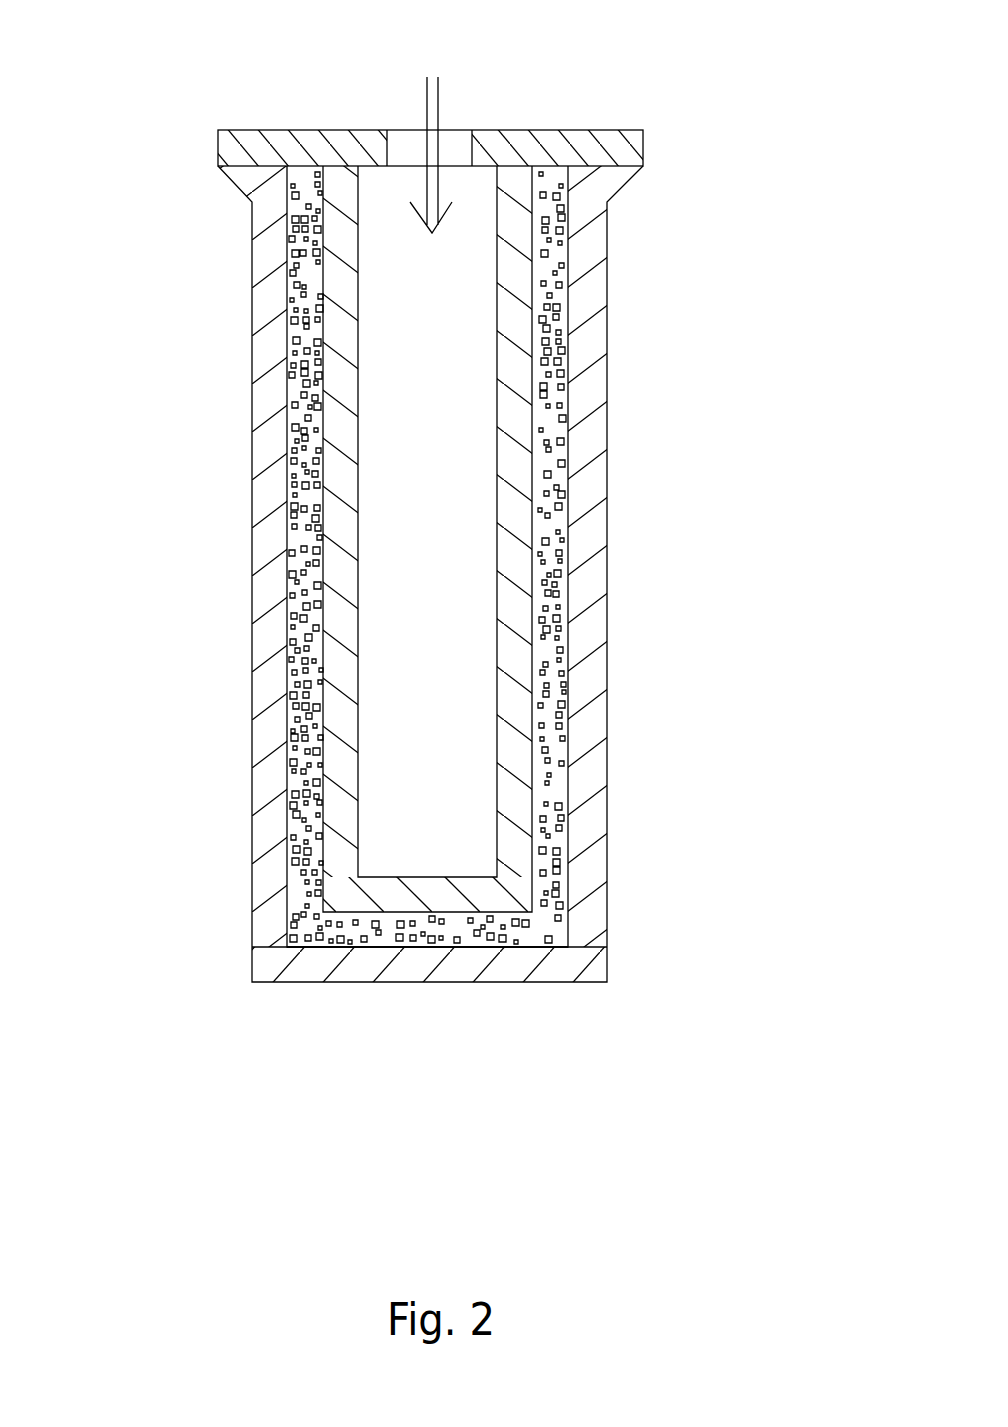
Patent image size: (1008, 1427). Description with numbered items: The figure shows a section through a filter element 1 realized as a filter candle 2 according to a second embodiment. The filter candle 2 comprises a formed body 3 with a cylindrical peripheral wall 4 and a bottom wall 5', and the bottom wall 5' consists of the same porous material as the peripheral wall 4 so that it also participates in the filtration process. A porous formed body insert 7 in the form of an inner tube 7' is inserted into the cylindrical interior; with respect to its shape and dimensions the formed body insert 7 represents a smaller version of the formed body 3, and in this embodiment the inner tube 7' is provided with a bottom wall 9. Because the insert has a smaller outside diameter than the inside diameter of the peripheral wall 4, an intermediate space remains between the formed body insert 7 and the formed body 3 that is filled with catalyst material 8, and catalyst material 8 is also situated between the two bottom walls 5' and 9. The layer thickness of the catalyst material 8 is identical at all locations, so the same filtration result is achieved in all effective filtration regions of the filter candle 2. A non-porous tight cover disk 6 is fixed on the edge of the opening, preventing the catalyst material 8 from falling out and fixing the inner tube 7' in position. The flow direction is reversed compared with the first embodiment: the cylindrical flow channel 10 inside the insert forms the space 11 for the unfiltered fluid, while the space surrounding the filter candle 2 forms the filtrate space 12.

The filter element 1 is at (464, 650).
The filter candle 2 is at (399, 650).
The formed body 3 is at (476, 650).
The cylindrical peripheral wall 4 is at (474, 650).
The bottom wall 5' is at (429, 1040).
The cover disk 6 is at (583, 147).
The formed body insert 7 is at (297, 539).
The inner tube 7' is at (297, 539).
The catalyst material 8 is at (335, 653).
The bottom wall 9 is at (440, 882).
The flow channel 10 is at (427, 521).
The space for unfiltered fluid 11 is at (460, 432).
The filtrate space 12 is at (168, 422).